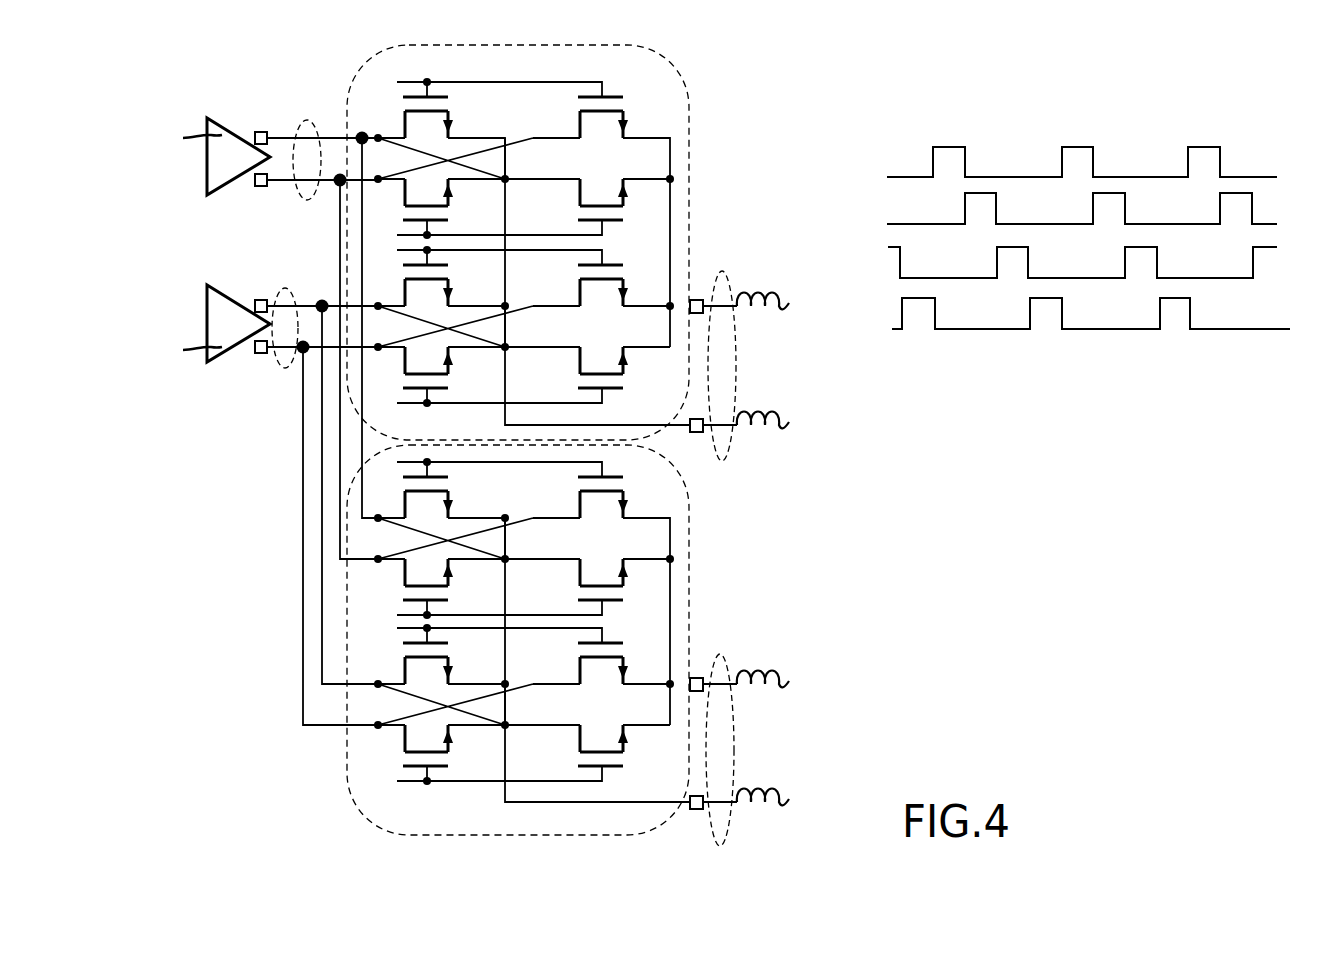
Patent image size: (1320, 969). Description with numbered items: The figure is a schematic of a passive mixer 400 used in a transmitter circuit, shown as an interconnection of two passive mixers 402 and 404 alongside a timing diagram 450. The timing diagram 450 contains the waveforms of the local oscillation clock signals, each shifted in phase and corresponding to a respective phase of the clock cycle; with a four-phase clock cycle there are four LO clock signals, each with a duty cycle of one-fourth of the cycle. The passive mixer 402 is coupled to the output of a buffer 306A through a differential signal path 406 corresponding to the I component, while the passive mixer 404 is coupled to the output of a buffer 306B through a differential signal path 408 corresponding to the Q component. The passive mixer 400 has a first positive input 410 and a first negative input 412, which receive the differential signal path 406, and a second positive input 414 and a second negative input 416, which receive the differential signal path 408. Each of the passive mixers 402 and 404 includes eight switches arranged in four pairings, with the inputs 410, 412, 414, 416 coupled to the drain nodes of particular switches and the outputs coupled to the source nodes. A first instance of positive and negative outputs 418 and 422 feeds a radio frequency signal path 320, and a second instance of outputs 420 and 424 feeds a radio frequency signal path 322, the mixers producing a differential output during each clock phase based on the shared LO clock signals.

The passive mixer 400 is at (772, 92).
The passive mixer 402 is at (689, 193).
The passive mixer 404 is at (690, 563).
The differential signal path 406 is at (305, 120).
The differential signal path 408 is at (289, 290).
The first positive input 410 is at (186, 135).
The first negative input 412 is at (262, 186).
The second positive input 414 is at (262, 298).
The second negative input 416 is at (187, 351).
The output 418 is at (697, 300).
The output 420 is at (697, 678).
The output 422 is at (697, 432).
The output 424 is at (695, 810).
The buffer 306A is at (227, 193).
The buffer 306B is at (230, 292).
The radio frequency signal path 320 is at (730, 287).
The radio frequency signal path 322 is at (728, 666).
The timing diagram 450 is at (1229, 92).